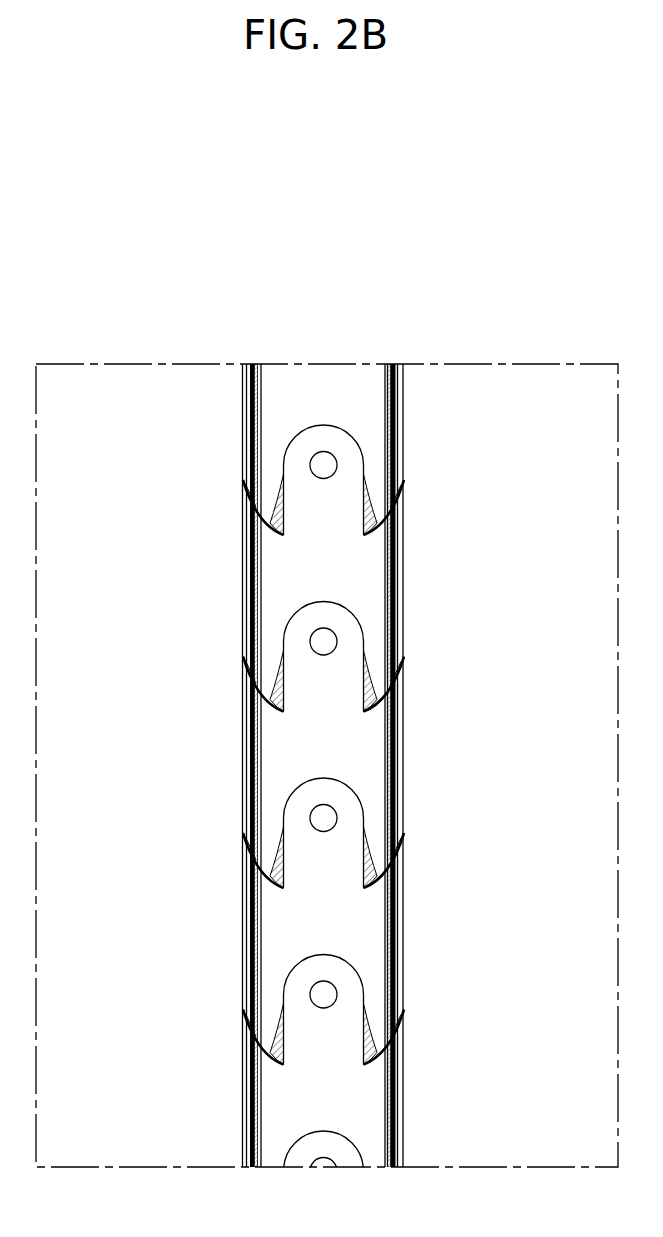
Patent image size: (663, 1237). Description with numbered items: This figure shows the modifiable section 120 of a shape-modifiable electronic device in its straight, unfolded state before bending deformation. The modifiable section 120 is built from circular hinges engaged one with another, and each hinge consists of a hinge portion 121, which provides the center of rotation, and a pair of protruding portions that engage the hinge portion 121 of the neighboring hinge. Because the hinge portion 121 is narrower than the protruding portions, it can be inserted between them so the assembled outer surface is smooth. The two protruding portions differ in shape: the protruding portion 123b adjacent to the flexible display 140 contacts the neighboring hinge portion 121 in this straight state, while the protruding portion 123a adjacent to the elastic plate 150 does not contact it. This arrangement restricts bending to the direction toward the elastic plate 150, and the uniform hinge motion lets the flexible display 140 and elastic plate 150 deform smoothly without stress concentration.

The modifiable section 120 is at (350, 800).
The hinge portion 121 is at (347, 633).
The protruding portion 123a is at (266, 676).
The protruding portion 123b is at (367, 672).
The flexible display 140 is at (390, 551).
The elastic plate 150 is at (246, 551).